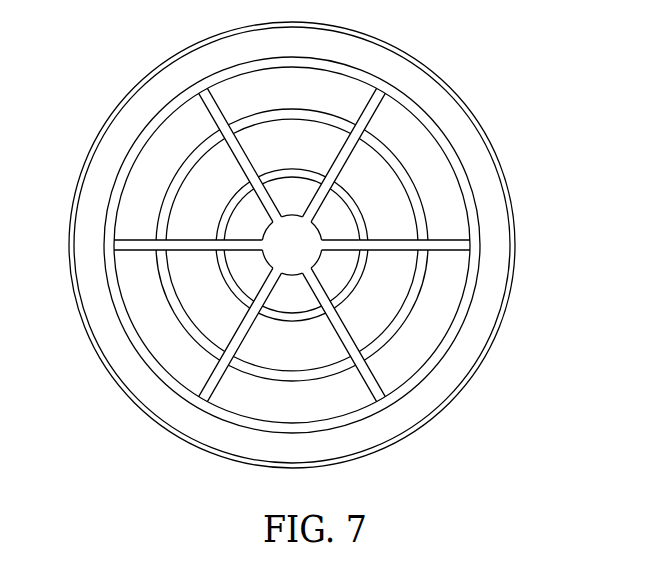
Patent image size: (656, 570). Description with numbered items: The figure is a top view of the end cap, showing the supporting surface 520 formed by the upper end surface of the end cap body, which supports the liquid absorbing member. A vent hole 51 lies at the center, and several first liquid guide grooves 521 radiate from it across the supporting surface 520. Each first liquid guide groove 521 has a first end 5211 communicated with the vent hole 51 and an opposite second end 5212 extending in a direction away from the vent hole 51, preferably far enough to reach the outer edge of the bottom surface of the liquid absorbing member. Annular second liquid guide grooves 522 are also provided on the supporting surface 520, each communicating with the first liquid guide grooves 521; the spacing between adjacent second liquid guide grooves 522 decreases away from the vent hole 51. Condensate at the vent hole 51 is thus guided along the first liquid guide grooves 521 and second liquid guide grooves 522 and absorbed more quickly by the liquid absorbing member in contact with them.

The vent hole 51 is at (277, 253).
The supporting surface 520 is at (158, 170).
The first liquid guide groove 521 is at (393, 243).
The first end 5211 is at (325, 240).
The second end 5212 is at (470, 242).
The second liquid guide groove 522 is at (408, 308).